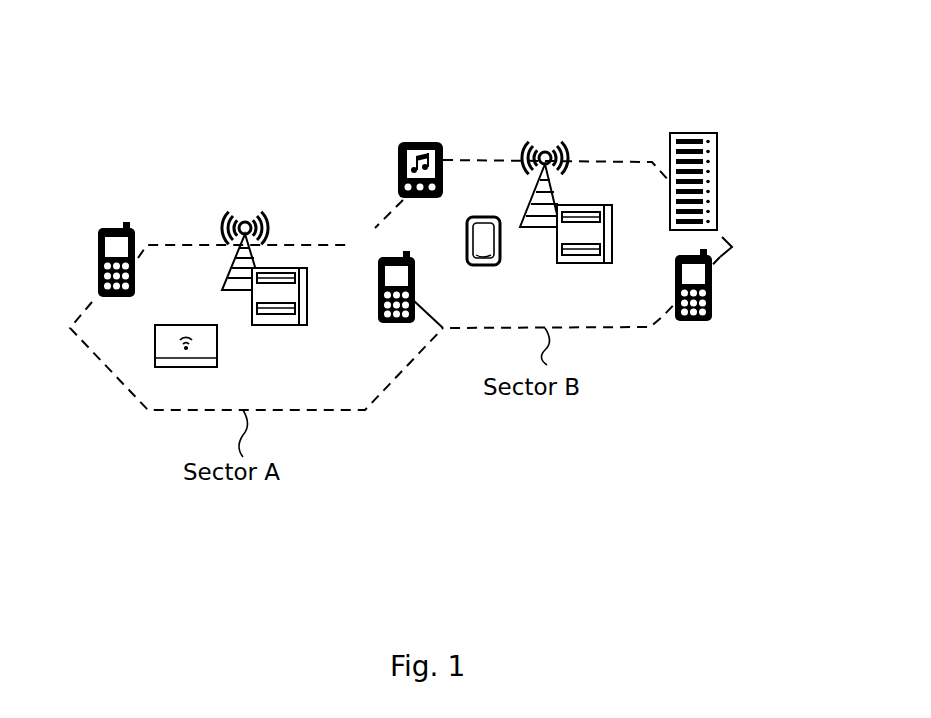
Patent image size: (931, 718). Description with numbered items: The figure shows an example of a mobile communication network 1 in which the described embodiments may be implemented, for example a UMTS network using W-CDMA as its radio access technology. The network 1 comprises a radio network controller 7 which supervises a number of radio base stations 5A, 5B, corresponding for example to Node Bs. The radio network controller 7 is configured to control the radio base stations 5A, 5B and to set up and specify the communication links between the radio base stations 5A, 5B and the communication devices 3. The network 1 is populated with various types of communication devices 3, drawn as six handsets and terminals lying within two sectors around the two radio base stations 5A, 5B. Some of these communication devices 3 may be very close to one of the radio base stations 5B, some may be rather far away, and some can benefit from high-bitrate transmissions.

The mobile communication network 1 is at (645, 98).
The communication devices 3 is at (112, 222).
The radio base station 5A is at (307, 312).
The radio base station 5B is at (613, 235).
The radio network controller 7 is at (687, 133).